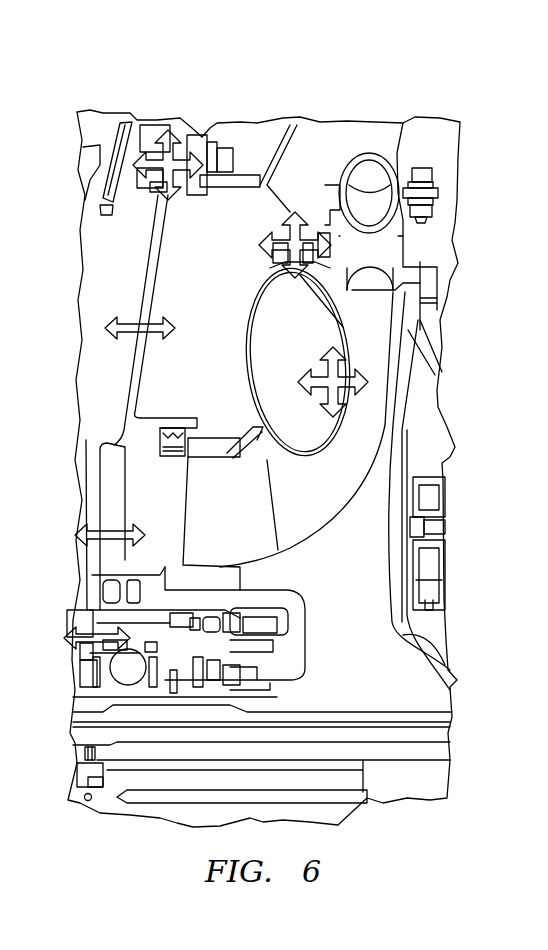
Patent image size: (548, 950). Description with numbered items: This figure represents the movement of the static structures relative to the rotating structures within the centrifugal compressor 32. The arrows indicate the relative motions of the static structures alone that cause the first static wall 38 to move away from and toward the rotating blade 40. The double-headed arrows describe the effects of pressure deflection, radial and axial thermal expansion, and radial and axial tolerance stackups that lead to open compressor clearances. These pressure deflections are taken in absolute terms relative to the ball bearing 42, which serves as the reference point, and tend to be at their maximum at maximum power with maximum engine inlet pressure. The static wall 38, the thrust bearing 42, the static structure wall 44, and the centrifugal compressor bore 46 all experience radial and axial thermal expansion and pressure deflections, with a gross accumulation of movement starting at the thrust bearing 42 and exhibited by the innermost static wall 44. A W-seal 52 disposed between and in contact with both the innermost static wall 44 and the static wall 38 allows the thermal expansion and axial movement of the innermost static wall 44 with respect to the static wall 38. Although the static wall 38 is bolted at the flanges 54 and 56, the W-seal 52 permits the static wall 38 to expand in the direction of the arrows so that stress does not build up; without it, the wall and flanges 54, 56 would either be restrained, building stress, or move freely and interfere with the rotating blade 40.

The centrifugal compressor 32 is at (474, 226).
The first static wall 38 is at (318, 398).
The rotating blade 40 is at (385, 360).
The ball bearing 42 is at (110, 667).
The static structure wall 44 is at (140, 356).
The centrifugal compressor bore 46 is at (440, 632).
The W-seal 52 is at (160, 440).
The flange 54 is at (214, 150).
The flange 56 is at (305, 212).